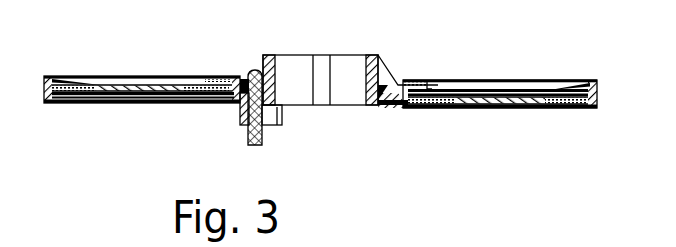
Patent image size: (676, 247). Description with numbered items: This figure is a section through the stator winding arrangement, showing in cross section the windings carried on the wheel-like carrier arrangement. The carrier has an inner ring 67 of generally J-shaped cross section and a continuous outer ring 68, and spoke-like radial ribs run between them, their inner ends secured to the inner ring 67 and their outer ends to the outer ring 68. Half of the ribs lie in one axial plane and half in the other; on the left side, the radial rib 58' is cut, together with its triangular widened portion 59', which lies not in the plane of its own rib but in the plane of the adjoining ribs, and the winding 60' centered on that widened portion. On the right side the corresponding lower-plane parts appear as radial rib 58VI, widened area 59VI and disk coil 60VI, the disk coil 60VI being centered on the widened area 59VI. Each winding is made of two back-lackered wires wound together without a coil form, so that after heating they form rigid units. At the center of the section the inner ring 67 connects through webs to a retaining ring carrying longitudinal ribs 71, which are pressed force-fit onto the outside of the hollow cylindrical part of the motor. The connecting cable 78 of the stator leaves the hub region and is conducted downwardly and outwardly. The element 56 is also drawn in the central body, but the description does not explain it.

The radial rib 58' is at (142, 118).
The triangular widened portion 59' is at (117, 61).
The winding 60' is at (206, 61).
The inner ring 67 is at (237, 105).
The connecting cable 78 is at (263, 142).
The longitudinal rib 71 is at (322, 72).
The body right chamber 56 is at (353, 72).
The radial rib 58VI is at (507, 93).
The outer ring 68 is at (600, 85).
The widened area 59VI is at (490, 107).
The disk coil 60VI is at (567, 108).